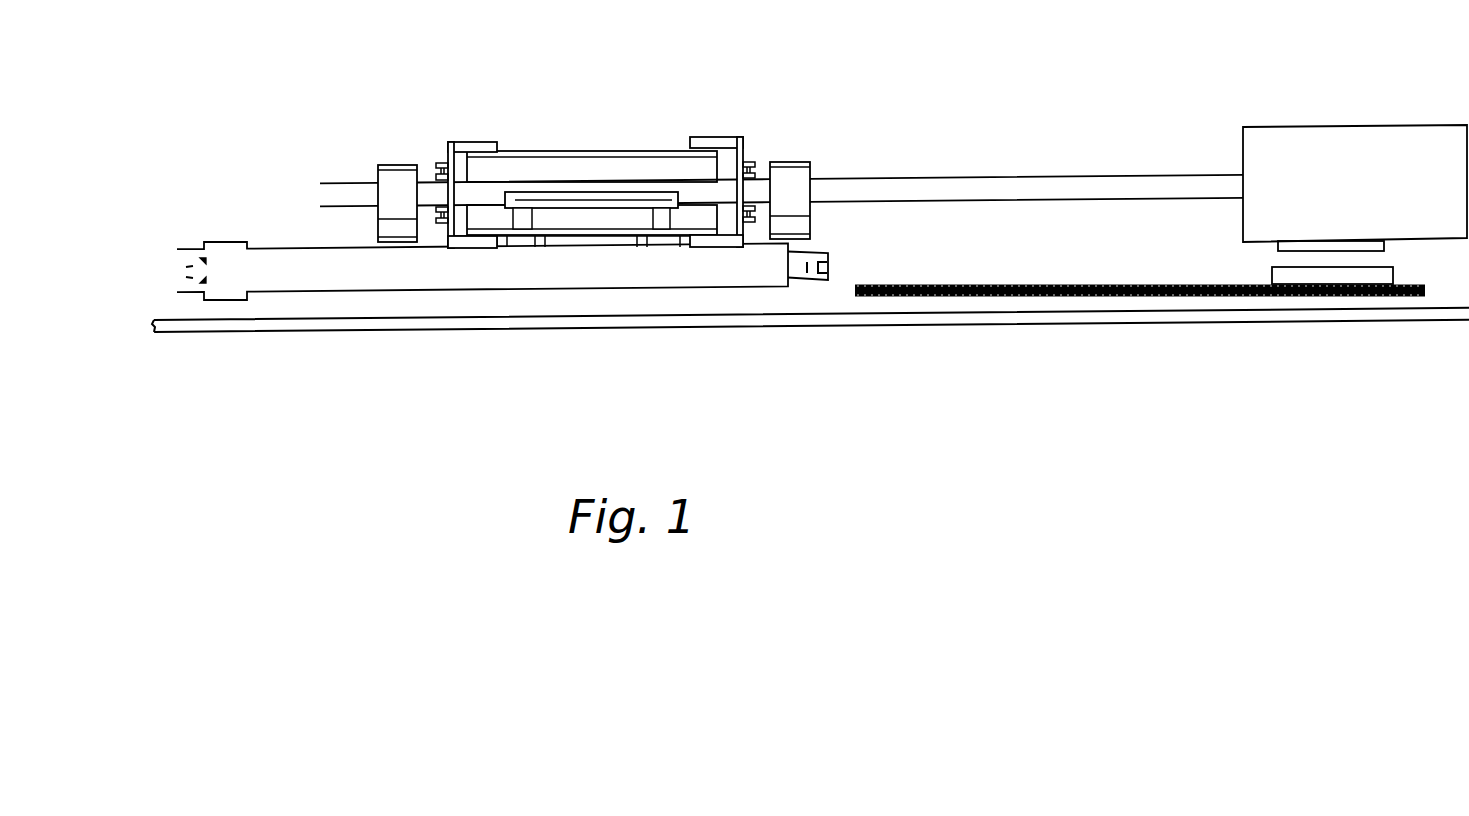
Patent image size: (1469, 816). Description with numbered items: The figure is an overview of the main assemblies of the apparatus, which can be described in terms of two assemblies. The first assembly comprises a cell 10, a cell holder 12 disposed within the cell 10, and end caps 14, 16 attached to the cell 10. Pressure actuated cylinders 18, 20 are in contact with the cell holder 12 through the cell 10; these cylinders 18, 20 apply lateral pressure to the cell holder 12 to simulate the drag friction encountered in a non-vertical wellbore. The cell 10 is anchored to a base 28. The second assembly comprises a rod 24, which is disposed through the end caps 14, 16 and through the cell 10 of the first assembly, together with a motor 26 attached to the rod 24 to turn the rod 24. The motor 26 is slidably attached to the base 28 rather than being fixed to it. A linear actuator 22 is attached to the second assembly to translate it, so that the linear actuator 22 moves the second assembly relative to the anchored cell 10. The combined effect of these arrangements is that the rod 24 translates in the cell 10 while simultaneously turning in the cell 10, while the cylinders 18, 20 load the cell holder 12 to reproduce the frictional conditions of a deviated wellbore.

The cell 10 is at (657, 132).
The cell holder 12 is at (568, 217).
The end cap 14 is at (438, 133).
The end cap 16 is at (746, 124).
The pressure actuated cylinder 18 is at (522, 215).
The pressure actuated cylinder 20 is at (662, 215).
The linear actuator 22 is at (335, 281).
The rod 24 is at (938, 168).
The motor 26 is at (1267, 210).
The base 28 is at (1300, 295).